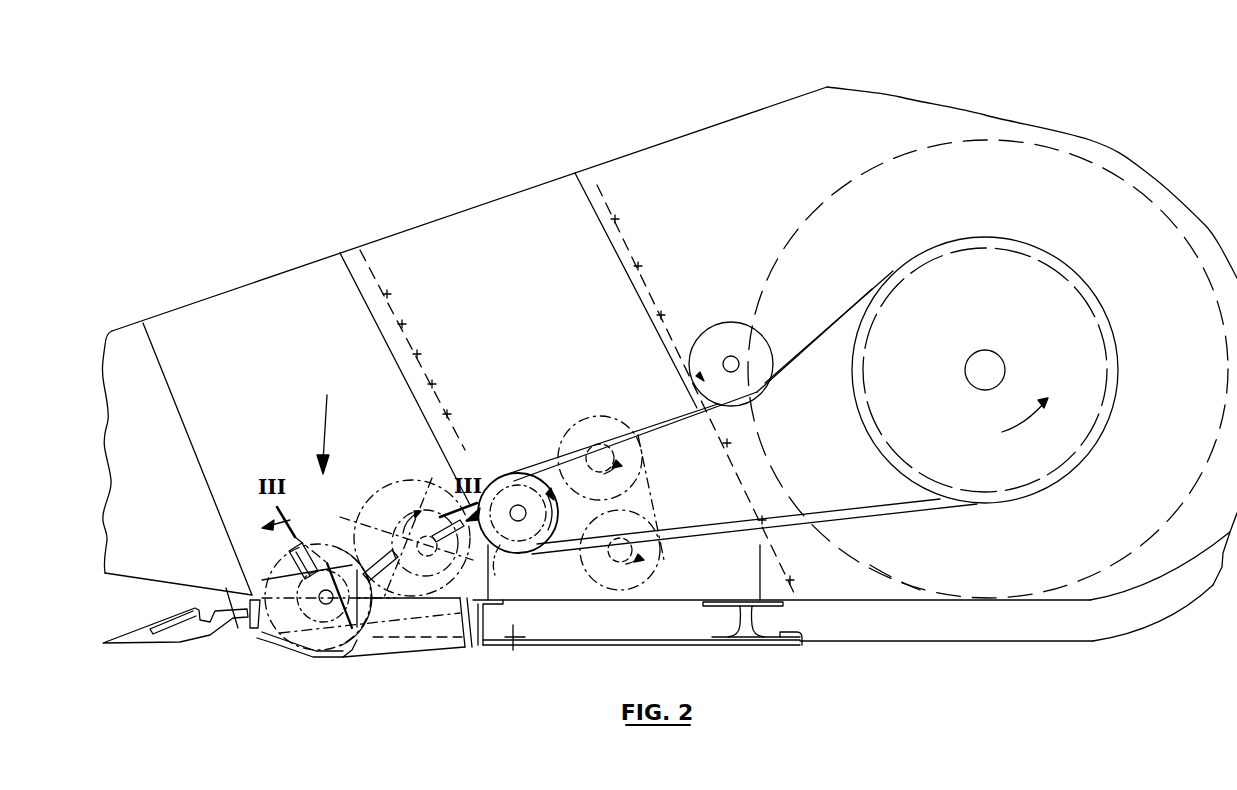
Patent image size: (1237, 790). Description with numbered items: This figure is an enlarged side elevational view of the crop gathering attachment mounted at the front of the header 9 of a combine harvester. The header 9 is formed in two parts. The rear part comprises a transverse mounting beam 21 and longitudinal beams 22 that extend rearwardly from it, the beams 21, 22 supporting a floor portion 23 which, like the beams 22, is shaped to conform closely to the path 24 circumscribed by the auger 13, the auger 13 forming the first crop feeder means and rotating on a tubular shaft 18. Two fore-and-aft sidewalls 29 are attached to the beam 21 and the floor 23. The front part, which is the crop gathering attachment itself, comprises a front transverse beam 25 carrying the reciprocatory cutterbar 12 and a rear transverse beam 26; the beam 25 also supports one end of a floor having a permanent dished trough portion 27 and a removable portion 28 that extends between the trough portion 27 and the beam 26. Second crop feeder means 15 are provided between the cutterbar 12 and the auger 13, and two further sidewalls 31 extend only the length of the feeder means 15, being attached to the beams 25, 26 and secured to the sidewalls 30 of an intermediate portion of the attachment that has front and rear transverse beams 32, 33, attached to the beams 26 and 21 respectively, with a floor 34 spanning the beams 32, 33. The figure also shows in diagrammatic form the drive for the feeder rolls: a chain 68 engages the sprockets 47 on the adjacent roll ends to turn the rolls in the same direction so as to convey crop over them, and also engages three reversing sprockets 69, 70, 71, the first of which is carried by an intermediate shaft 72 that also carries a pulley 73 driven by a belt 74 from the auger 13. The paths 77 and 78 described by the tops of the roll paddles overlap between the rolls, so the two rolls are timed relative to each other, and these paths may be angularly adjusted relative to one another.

The header 9 is at (720, 116).
The reciprocatory cutterbar 12 is at (184, 634).
The auger 13 is at (1149, 203).
The second crop feeder means 15 is at (322, 421).
The tubular shaft 18 is at (1006, 370).
The transverse mounting beam 21 is at (797, 640).
The longitudinal beams 22 is at (956, 643).
The floor portion 23 is at (1102, 598).
The path circumscribed by the auger 24 is at (896, 577).
The front transverse beam 25 is at (246, 630).
The rear transverse beam 26 is at (470, 648).
The trough portion 27 is at (288, 648).
The removable floor portion 28 is at (412, 645).
The sidewalls 29 is at (642, 170).
The sidewalls of intermediate portion 30 is at (434, 238).
The further sidewalls 31 is at (226, 313).
The front transverse beam of intermediate portion 32 is at (497, 604).
The rear transverse beam of intermediate portion 33 is at (708, 604).
The floor of intermediate portion 34 is at (645, 602).
The sprockets 47 is at (324, 572).
The chain 68 is at (656, 499).
The reversing sprocket 69 is at (516, 490).
The reversing sprocket 70 is at (598, 425).
The reversing sprocket 71 is at (654, 558).
The intermediate shaft 72 is at (516, 545).
The pulley 73 is at (528, 540).
The belt 74 is at (838, 510).
The path of paddle tops 77 is at (280, 560).
The path of paddle tops 78 is at (388, 486).